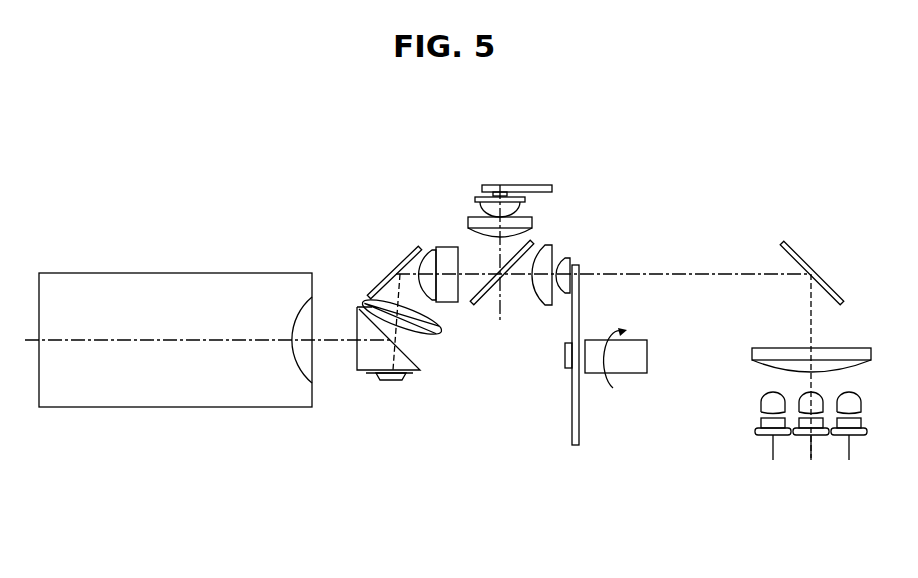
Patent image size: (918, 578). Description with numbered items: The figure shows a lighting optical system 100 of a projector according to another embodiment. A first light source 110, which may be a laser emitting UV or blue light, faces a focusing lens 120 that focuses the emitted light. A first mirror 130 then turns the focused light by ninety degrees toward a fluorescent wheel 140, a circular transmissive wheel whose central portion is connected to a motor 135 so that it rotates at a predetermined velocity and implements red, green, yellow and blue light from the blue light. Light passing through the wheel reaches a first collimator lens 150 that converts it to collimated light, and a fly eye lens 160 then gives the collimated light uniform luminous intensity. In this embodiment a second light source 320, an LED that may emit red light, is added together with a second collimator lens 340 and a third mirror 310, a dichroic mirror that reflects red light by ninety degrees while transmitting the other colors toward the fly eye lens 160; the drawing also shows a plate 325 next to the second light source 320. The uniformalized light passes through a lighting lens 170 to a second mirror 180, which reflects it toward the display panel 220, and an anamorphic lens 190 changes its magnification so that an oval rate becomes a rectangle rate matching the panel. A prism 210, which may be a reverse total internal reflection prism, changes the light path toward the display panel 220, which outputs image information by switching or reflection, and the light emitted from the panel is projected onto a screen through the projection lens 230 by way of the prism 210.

The lighting optical system 100 is at (70, 163).
The first light source 110 is at (770, 421).
The focusing lens 120 is at (770, 354).
The first mirror 130 is at (802, 262).
The motor 135 is at (630, 365).
The fluorescent wheel 140 is at (565, 468).
The first collimator lens 150 is at (560, 229).
The fly eye lens 160 is at (448, 248).
The lighting lens 170 is at (430, 250).
The second mirror 180 is at (388, 268).
The anamorphic lens 190 is at (430, 337).
The prism 210 is at (360, 305).
The display panel 220 is at (377, 383).
The projection lens 230 is at (165, 393).
The third mirror 310 is at (485, 302).
The second light source 320 is at (490, 193).
The plate 325 is at (542, 185).
The second collimator lens 340 is at (468, 203).